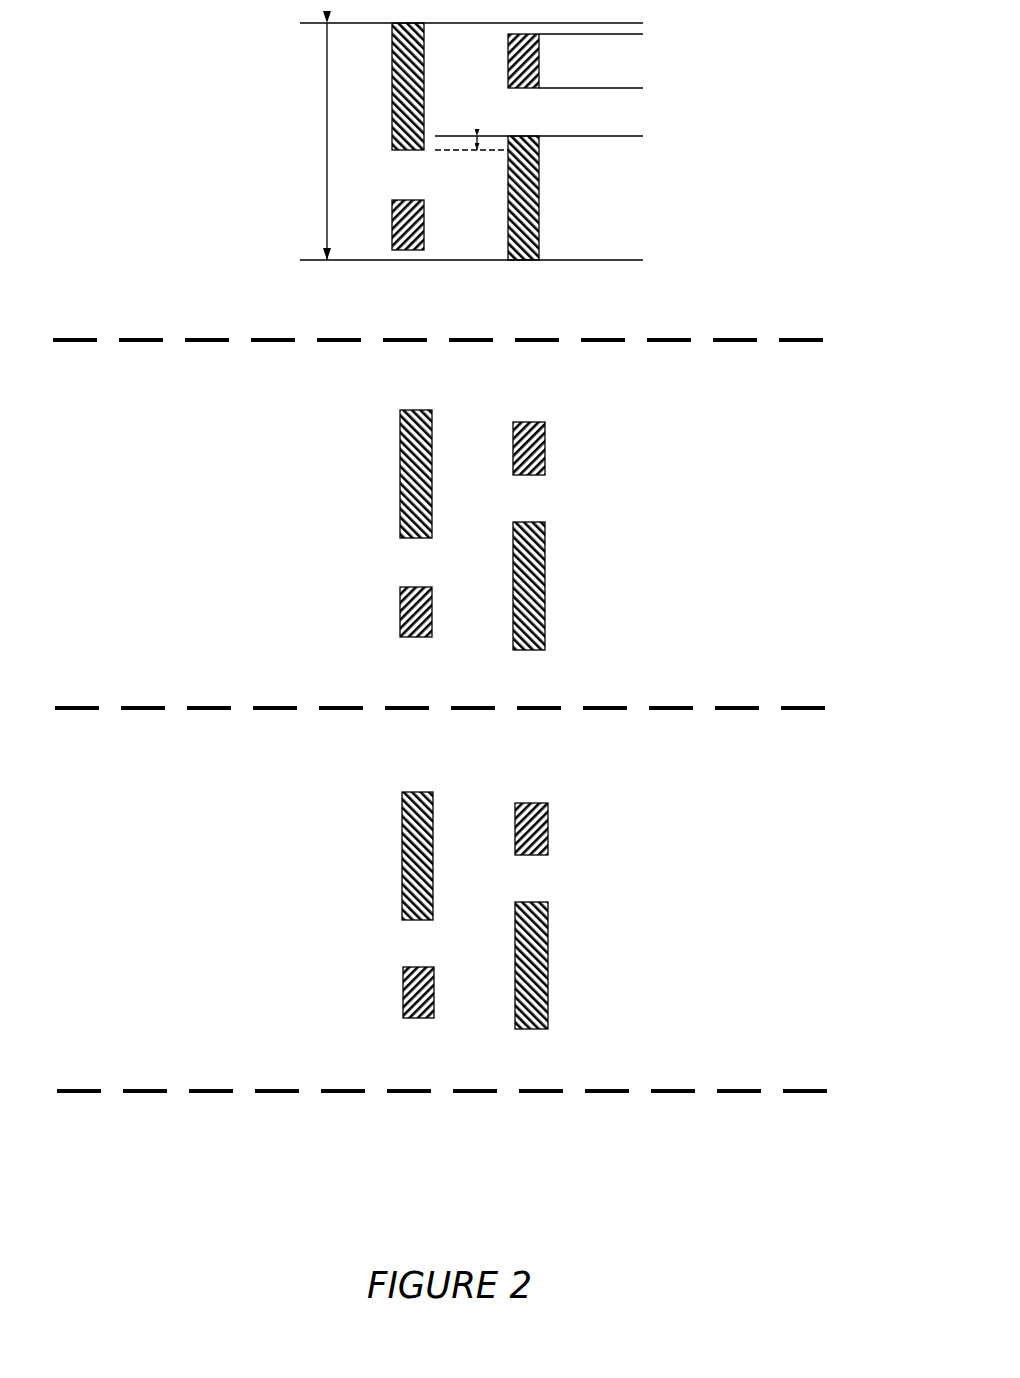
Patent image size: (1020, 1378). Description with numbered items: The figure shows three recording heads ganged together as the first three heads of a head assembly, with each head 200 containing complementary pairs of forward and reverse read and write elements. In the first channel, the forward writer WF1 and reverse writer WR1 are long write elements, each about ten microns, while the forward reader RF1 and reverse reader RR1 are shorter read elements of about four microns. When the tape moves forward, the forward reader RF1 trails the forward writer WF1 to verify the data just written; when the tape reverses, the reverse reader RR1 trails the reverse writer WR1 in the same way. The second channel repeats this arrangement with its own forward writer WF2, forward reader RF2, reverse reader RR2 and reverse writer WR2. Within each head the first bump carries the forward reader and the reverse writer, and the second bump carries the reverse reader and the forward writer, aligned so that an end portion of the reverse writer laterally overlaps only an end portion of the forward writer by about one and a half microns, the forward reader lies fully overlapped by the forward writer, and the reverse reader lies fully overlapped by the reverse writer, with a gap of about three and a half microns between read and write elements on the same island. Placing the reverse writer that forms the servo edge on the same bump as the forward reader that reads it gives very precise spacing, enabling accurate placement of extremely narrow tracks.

The head 200 is at (782, 425).
The forward write element WF1 is at (402, 454).
The forward read element RF1 is at (538, 428).
The reverse read element RR1 is at (408, 633).
The reverse write element WR1 is at (536, 603).
The forward write element WF2 is at (403, 835).
The forward read element RF2 is at (541, 809).
The reverse read element RR2 is at (410, 1014).
The reverse write element WR2 is at (539, 985).